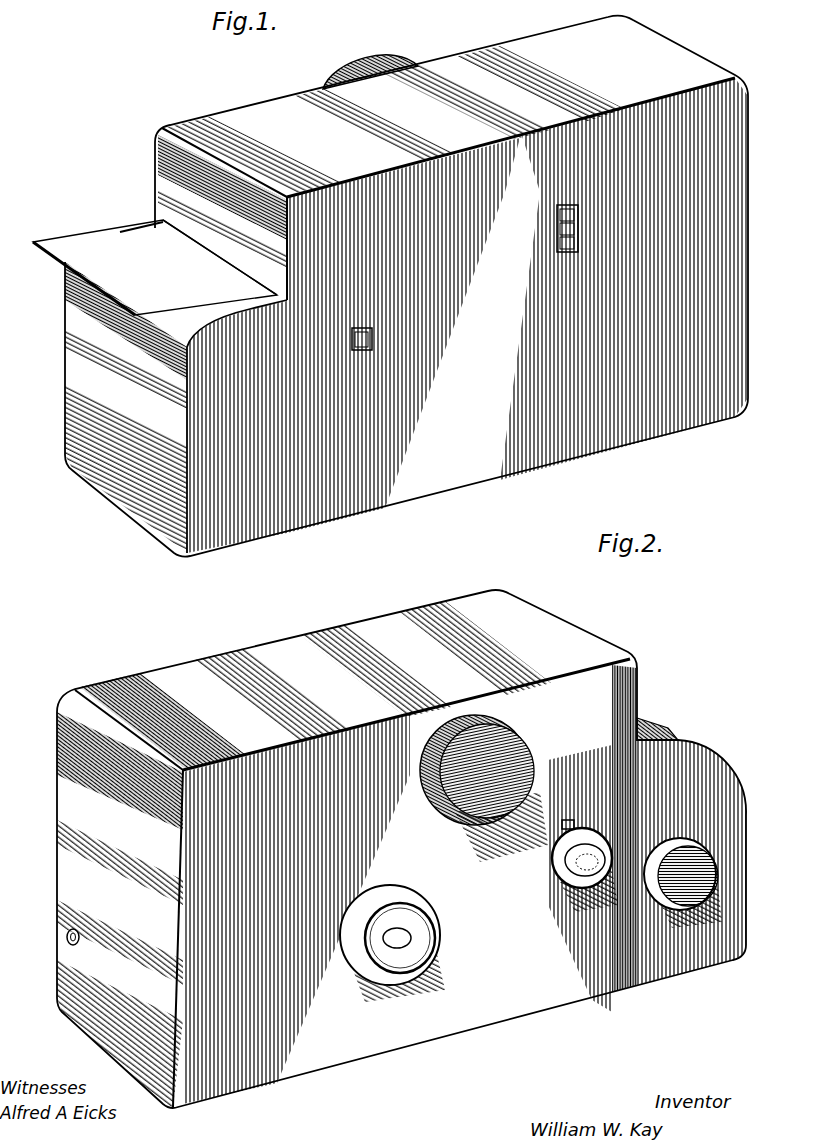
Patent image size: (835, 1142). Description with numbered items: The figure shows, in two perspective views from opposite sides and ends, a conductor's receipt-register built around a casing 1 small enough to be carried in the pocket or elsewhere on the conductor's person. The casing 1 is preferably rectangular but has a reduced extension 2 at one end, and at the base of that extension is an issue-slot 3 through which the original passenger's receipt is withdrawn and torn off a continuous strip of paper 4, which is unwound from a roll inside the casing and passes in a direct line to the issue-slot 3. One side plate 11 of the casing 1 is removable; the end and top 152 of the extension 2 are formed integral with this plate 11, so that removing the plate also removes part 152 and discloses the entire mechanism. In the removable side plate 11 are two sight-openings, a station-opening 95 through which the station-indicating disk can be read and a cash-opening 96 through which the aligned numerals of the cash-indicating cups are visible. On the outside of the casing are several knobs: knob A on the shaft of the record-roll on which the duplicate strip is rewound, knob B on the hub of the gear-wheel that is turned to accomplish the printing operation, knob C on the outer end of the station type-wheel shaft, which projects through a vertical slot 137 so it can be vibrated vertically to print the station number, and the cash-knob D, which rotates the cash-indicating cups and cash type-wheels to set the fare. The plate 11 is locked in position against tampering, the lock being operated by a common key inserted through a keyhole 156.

In FIG. 1, the casing 1 is at (532, 40).
In FIG. 2, the casing 1 is at (483, 688).
In FIG. 1, the removable side plate 11 is at (517, 305).
In FIG. 2, the removable side plate 11 is at (272, 641).
In FIG. 1, the reduced extension 2 is at (130, 228).
In FIG. 2, the reduced extension 2 is at (718, 763).
In FIG. 1, the issue-slot 3 is at (220, 254).
In FIG. 1, the continuous strip of paper 4 is at (155, 267).
In FIG. 1, the station sight-opening 95 is at (372, 343).
In FIG. 1, the cash sight-opening 96 is at (558, 247).
In FIG. 1, the end and top of the extension 152 is at (126, 407).
In FIG. 2, the end and top of the extension 152 is at (672, 731).
In FIG. 2, the keyhole 156 is at (66, 937).
In FIG. 2, the vertical slot 137 is at (568, 819).
In FIG. 2, the knob A is at (718, 868).
In FIG. 1, the knob B is at (366, 58).
In FIG. 2, the knob B is at (500, 730).
In FIG. 2, the knob C is at (566, 893).
In FIG. 2, the cash-knob D is at (407, 894).